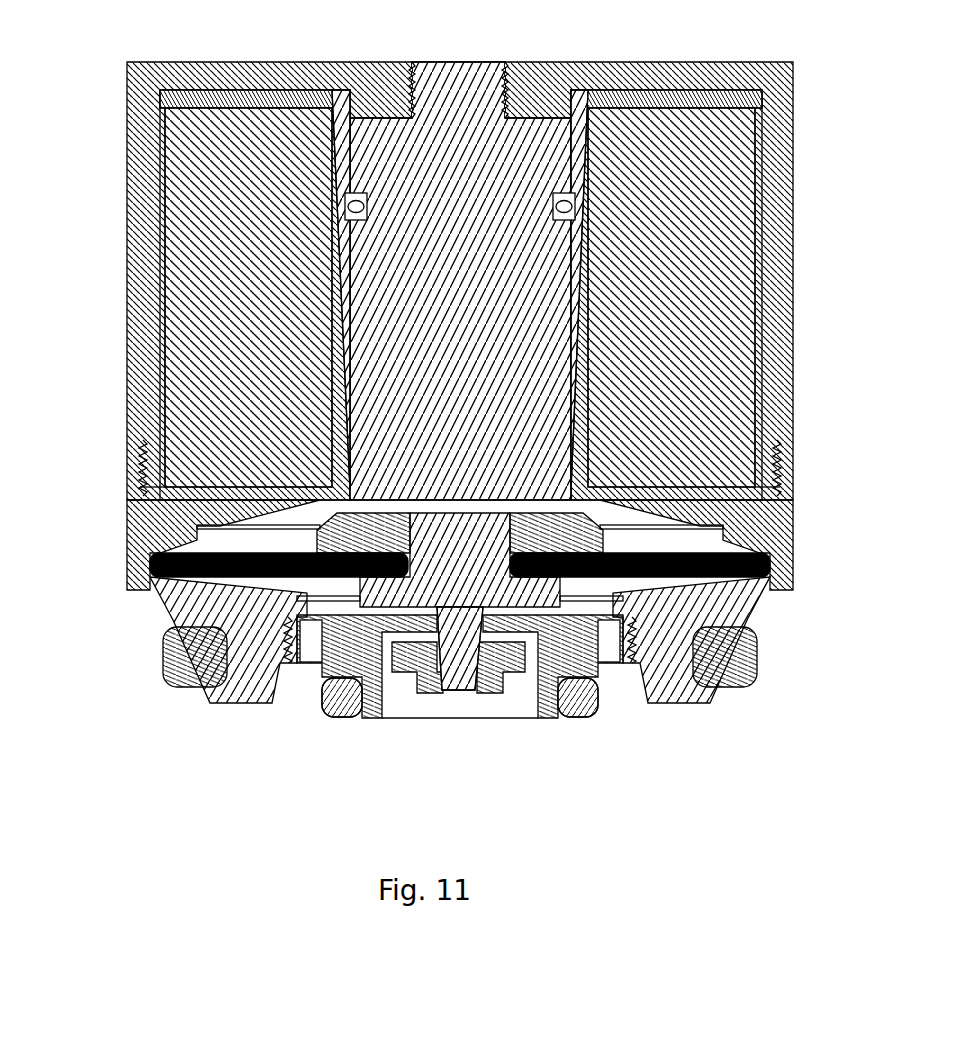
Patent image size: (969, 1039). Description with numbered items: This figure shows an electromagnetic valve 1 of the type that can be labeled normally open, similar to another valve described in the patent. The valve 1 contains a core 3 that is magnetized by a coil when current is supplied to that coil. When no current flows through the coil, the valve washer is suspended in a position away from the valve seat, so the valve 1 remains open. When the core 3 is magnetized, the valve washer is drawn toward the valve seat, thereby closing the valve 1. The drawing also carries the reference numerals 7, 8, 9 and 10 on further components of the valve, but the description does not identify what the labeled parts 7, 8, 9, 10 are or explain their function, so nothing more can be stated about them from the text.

The valve 1 is at (108, 634).
The core 3 is at (385, 330).
The retaining bracket 7 is at (413, 707).
The flange member 8 is at (302, 693).
The shaft end with nuts 9 is at (483, 600).
The sealing plate 10 is at (643, 537).